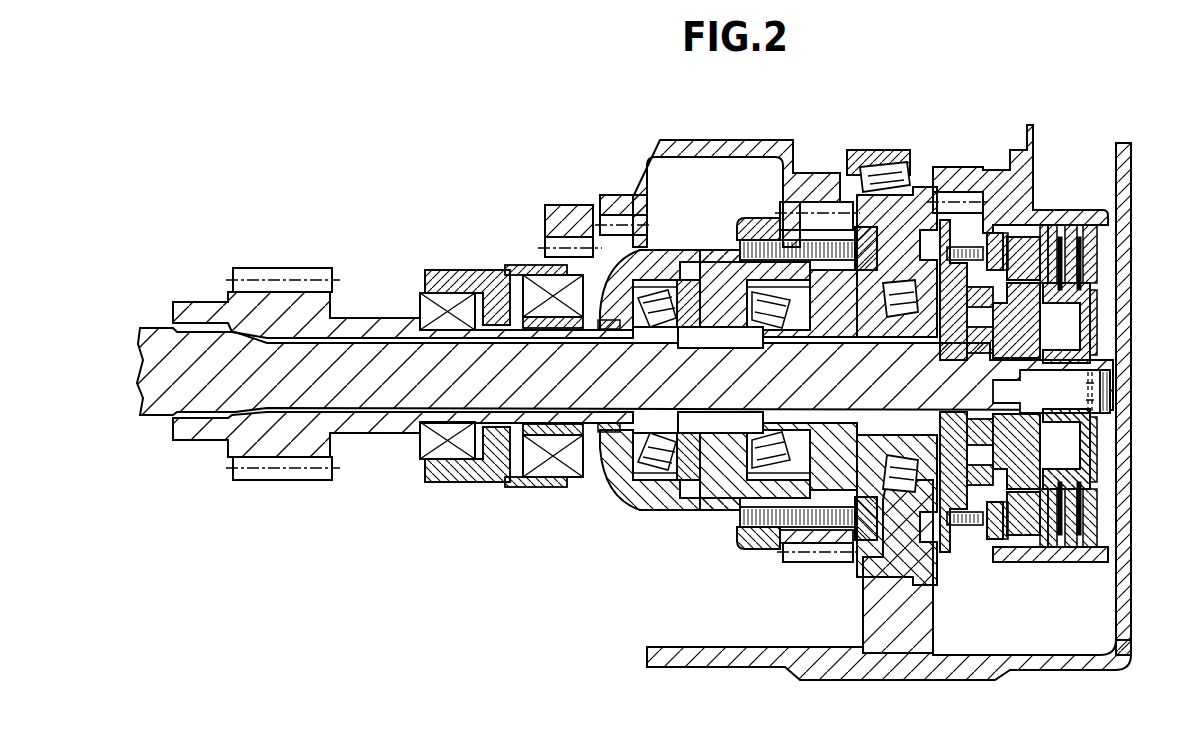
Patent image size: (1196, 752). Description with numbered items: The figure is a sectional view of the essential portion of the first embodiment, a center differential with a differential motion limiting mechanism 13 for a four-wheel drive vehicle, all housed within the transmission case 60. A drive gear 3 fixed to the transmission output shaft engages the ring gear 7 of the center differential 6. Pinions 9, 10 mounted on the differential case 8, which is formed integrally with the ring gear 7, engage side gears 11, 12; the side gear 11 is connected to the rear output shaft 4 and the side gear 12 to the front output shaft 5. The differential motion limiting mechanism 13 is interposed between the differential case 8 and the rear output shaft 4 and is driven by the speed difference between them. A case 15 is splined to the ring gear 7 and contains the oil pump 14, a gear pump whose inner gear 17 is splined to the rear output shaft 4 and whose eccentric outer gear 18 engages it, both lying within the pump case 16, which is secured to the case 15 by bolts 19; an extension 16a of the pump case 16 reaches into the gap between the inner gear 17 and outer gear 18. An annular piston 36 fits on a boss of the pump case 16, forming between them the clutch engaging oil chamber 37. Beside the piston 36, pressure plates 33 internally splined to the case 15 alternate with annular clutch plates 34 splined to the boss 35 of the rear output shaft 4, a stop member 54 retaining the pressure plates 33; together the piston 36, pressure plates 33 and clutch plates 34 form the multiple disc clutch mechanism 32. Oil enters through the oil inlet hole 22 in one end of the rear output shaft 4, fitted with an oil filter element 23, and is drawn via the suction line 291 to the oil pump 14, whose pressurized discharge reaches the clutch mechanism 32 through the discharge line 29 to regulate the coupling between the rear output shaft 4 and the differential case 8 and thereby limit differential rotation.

The drive gear 3 is at (793, 180).
The rear output shaft 4 is at (377, 320).
The front output shaft 5 is at (497, 337).
The center differential 6 is at (686, 240).
The ring gear 7 is at (817, 210).
The differential case 8 is at (707, 263).
The pinion 9 is at (685, 317).
The pinion 10 is at (693, 460).
The side gear 11 is at (740, 243).
The side gear 12 is at (587, 307).
The differential motion limiting mechanism 13 is at (1078, 212).
The oil pump 14 is at (1037, 317).
The case 15 is at (945, 285).
The pump case 16 is at (1005, 233).
The extension 16a is at (950, 173).
The inner gear 17 is at (1037, 337).
The outer gear 18 is at (975, 250).
The bolts 19 is at (1012, 232).
The oil inlet hole 22 is at (1100, 402).
The oil filter element 23 is at (1088, 380).
The discharge line 29 is at (1030, 240).
The suction line 291 is at (1080, 433).
The clutch mechanism 32 is at (1106, 262).
The pressure plates 33 is at (1097, 278).
The clutch plates 34 is at (1100, 240).
The boss 35 is at (1097, 312).
The piston 36 is at (1070, 225).
The oil chamber 37 is at (1006, 240).
The stop member 54 is at (1133, 206).
The transmission case 60 is at (1131, 551).